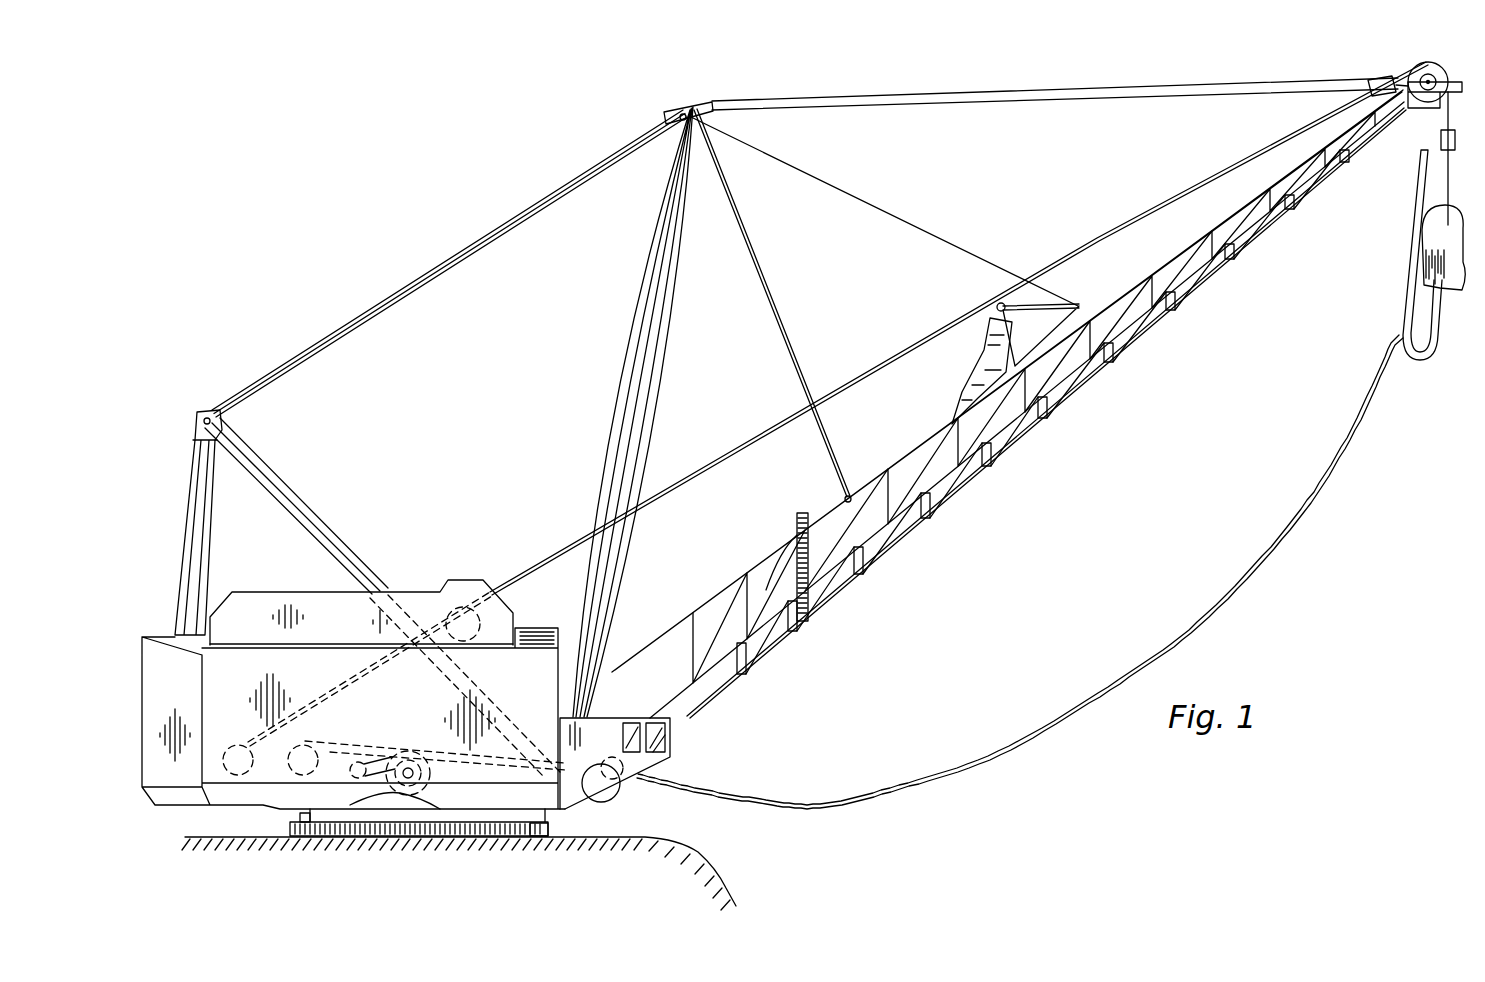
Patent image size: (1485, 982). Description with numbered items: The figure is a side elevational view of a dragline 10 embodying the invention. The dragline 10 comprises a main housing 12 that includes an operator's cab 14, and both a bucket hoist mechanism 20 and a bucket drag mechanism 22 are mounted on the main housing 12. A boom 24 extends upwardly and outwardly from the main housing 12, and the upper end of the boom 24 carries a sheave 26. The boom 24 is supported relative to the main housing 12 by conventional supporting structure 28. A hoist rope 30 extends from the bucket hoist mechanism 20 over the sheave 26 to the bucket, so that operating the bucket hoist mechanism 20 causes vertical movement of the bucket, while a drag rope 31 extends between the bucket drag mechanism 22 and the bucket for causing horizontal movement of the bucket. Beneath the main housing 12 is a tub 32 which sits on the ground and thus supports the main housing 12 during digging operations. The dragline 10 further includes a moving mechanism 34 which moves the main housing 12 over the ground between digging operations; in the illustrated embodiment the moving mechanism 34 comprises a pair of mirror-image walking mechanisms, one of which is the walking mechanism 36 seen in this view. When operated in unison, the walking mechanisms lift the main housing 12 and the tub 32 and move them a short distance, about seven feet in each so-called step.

The dragline 10 is at (435, 235).
The main housing 12 is at (300, 678).
The operator's cab 14 is at (670, 737).
The bucket hoist mechanism 20 is at (222, 760).
The bucket drag mechanism 22 is at (312, 739).
The boom 24 is at (1232, 274).
The sheave 26 is at (1420, 64).
The supporting structure 28 is at (620, 143).
The hoist rope 30 is at (1096, 243).
The drag rope 31 is at (1313, 480).
The tub 32 is at (548, 829).
The moving mechanism 34 is at (412, 748).
The walking mechanism 36 is at (292, 825).